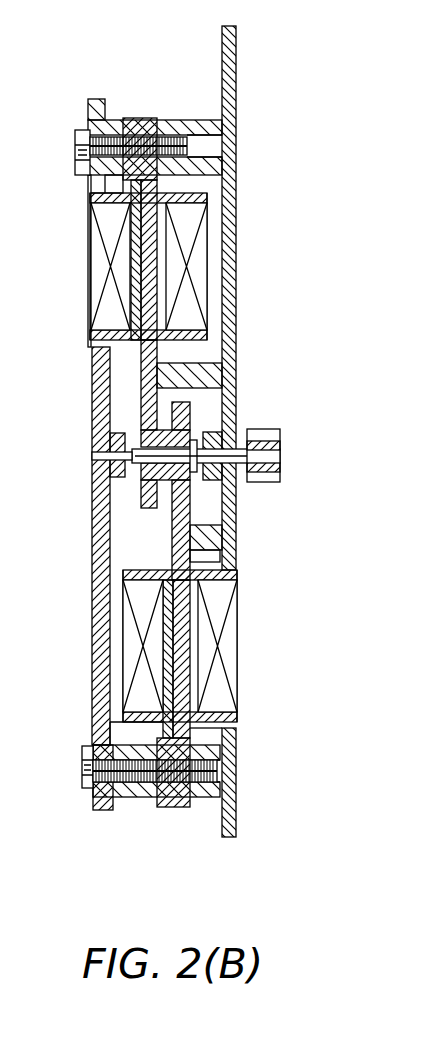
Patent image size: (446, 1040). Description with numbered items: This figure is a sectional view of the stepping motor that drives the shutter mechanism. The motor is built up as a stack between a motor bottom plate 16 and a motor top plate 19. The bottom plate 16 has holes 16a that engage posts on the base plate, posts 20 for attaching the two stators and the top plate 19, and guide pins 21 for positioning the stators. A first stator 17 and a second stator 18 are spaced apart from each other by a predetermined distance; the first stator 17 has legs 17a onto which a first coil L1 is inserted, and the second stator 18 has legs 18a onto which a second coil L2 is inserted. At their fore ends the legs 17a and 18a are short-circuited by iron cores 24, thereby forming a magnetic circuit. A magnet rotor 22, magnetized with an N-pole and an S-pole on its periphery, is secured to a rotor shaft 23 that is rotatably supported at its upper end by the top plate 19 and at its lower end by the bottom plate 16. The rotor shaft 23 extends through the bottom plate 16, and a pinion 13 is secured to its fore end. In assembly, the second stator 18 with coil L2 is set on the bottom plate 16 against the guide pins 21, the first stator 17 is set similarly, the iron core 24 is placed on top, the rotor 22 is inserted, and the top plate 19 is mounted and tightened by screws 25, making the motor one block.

The pinion 13 is at (272, 485).
The motor bottom plate 16 is at (236, 823).
The holes 16a is at (236, 63).
The first stator 17 is at (147, 402).
The legs 17a is at (130, 217).
The second stator 18 is at (175, 550).
The legs 18a is at (185, 615).
The motor top plate 19 is at (100, 99).
The posts 20 is at (198, 130).
The guide pins 21 is at (212, 378).
The magnet rotor 22 is at (140, 497).
The rotor shaft 23 is at (280, 453).
The iron cores 24 is at (128, 120).
The screws 25 is at (80, 152).
The first coil L1 is at (110, 312).
The second coil L2 is at (133, 655).